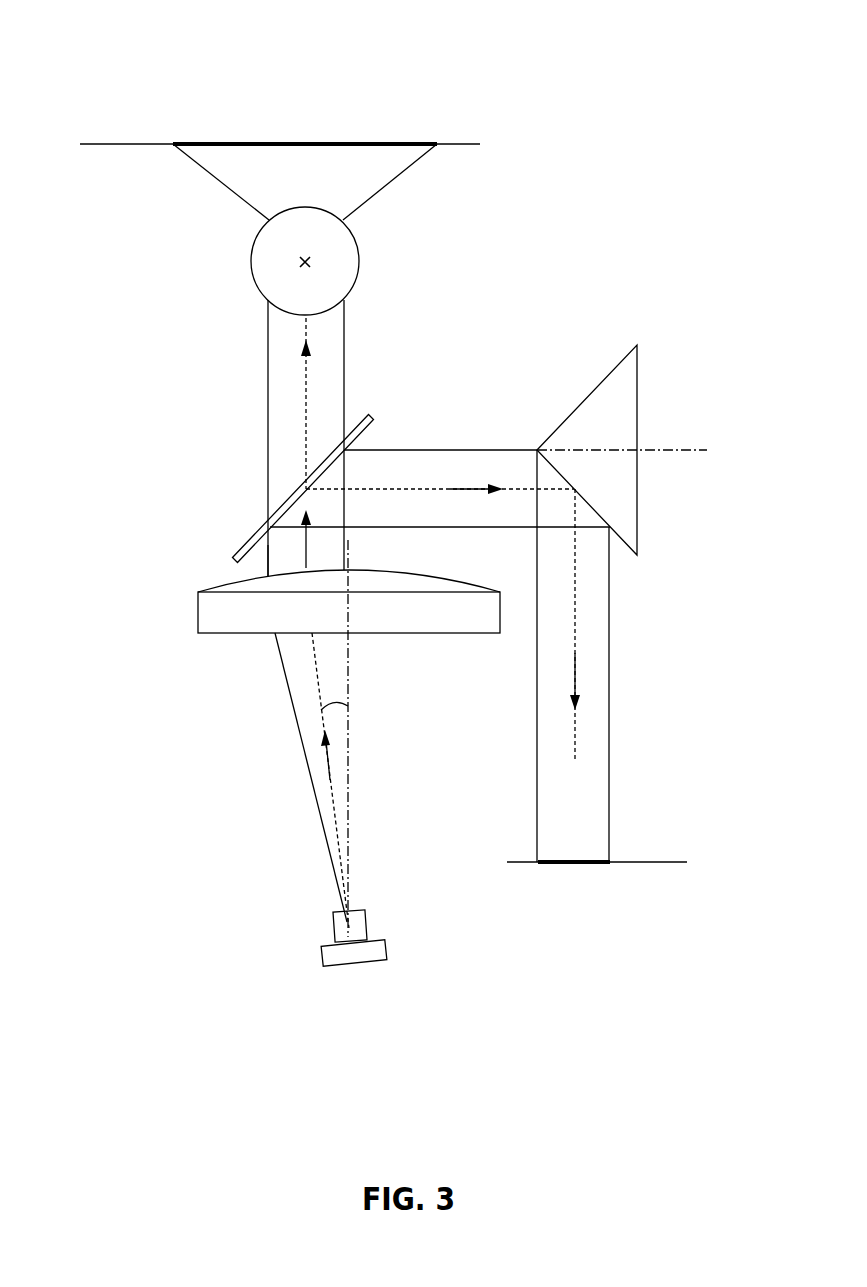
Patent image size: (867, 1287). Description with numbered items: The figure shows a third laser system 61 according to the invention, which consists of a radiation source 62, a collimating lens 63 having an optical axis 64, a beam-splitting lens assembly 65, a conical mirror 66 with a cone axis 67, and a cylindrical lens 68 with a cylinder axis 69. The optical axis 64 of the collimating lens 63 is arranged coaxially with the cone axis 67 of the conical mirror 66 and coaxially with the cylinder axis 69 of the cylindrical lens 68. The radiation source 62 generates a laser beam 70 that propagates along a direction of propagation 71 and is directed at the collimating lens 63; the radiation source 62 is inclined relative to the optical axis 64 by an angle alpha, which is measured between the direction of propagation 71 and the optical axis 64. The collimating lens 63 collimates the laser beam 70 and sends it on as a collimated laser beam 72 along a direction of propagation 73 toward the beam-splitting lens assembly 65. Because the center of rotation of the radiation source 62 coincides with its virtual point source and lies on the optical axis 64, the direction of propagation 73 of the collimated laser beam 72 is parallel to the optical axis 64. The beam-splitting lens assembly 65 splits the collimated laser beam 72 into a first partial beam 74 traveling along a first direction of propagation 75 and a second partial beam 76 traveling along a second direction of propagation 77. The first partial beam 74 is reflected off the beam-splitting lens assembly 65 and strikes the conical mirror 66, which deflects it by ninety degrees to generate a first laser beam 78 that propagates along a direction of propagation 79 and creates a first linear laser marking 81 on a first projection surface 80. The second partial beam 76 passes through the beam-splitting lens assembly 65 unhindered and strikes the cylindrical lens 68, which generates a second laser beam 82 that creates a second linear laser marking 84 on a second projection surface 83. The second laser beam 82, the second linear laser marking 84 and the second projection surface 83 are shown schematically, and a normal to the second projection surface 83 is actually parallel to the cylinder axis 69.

The laser system 61 is at (502, 974).
The radiation source 62 is at (328, 953).
The collimating lens 63 is at (223, 612).
The optical axis 64 is at (350, 677).
The beam-splitting lens assembly 65 is at (234, 550).
The conical mirror 66 is at (617, 385).
The cone axis 67 is at (690, 452).
The cylindrical lens 68 is at (358, 263).
The cylinder axis 69 is at (298, 262).
The laser beam 70 is at (328, 850).
The direction of propagation 71 is at (330, 762).
The collimated laser beam 72 is at (268, 568).
The direction of propagation 73 is at (310, 545).
The first partial beam 74 is at (412, 449).
The first direction of propagation 75 is at (473, 487).
The second partial beam 76 is at (268, 425).
The second direction of propagation 77 is at (303, 373).
The first laser beam 78 is at (610, 618).
The direction of propagation 79 is at (576, 678).
The first projection surface 80 is at (664, 850).
The first linear laser marking 81 is at (576, 859).
The second laser beam 82 is at (218, 183).
The second projection surface 83 is at (118, 140).
The second linear laser marking 84 is at (301, 142).